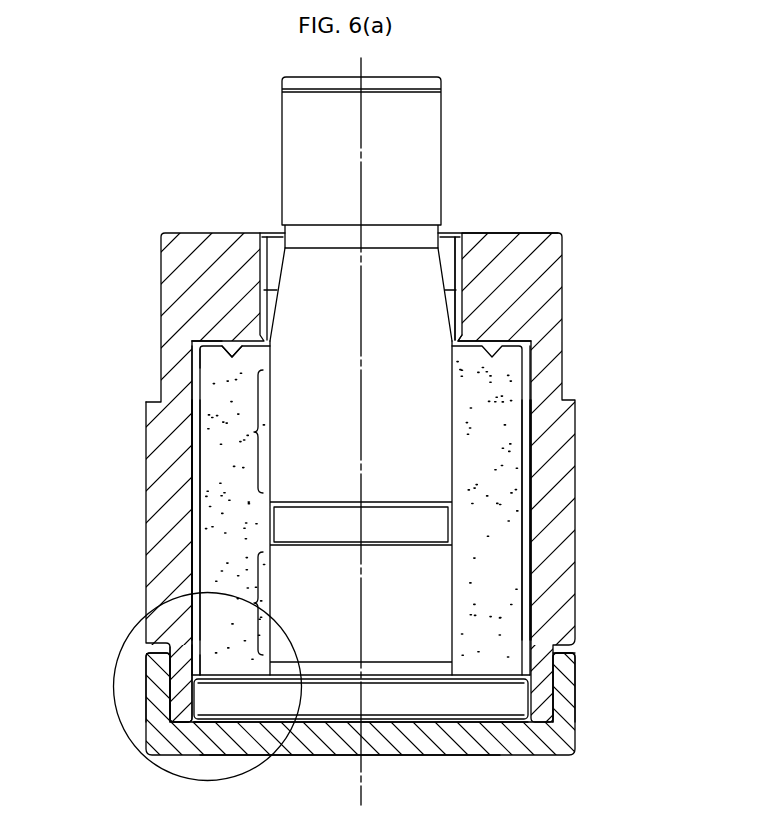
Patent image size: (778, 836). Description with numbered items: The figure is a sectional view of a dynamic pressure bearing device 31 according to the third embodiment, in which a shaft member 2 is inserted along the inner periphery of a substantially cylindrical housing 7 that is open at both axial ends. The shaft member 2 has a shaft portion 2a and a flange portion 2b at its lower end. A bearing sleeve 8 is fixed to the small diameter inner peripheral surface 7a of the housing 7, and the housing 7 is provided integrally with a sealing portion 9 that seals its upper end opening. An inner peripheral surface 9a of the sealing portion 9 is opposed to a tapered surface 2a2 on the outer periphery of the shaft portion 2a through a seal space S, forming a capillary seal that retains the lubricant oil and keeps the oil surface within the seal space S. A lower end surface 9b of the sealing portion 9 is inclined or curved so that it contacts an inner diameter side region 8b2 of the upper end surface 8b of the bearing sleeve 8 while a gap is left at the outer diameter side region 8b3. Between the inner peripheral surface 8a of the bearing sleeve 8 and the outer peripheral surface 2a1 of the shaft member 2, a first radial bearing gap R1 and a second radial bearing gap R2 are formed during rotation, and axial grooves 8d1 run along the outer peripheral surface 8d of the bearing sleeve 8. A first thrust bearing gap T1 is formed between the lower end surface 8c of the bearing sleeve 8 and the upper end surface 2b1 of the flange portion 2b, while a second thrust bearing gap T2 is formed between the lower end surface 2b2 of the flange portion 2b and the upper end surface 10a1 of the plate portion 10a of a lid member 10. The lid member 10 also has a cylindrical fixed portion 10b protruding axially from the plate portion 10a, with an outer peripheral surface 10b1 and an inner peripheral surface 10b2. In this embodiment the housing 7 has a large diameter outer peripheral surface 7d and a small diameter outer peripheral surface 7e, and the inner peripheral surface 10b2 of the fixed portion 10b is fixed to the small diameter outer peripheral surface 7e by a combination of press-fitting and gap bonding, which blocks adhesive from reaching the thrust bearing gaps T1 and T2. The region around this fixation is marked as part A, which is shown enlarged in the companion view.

The shaft member 2 is at (432, 408).
The shaft portion 2a is at (428, 135).
The outer peripheral surface of the shaft member 2a1 is at (453, 397).
The tapered surface 2a2 is at (447, 272).
The flange portion 2b is at (508, 695).
The upper end surface of the flange portion 2b1 is at (490, 670).
The lower end surface of the flange portion 2b2 is at (482, 726).
The housing 7 is at (160, 508).
The small diameter inner peripheral surface 7a is at (514, 517).
The large diameter outer peripheral surface 7d is at (190, 537).
The small diameter outer peripheral surface 7e is at (148, 673).
The bearing sleeve 8 is at (511, 435).
The inner peripheral surface of the bearing sleeve 8a is at (453, 438).
The upper end surface of the bearing sleeve 8b is at (493, 334).
The inner diameter side region of the upper end surface 8b2 is at (248, 343).
The outer diameter side region of the upper end surface 8b3 is at (210, 342).
The lower end surface of the bearing sleeve 8c is at (227, 683).
The outer peripheral surface of the bearing sleeve 8d is at (533, 570).
The axial groove 8d1 is at (197, 422).
The sealing portion 9 is at (202, 253).
The inner peripheral surface of the sealing portion 9a is at (268, 300).
The lower end surface of the sealing portion 9b is at (208, 362).
The lid member 10 is at (485, 764).
The plate portion 10a is at (418, 748).
The upper end surface of the plate portion 10a1 is at (292, 724).
The fixed portion 10b is at (562, 708).
The outer peripheral surface of the fixed portion 10b1 is at (157, 700).
The inner peripheral surface of the fixed portion 10b2 is at (553, 646).
The dynamic pressure bearing device 31 is at (579, 193).
The part A is at (121, 751).
The seal space S is at (273, 292).
The first radial bearing gap R1 is at (233, 433).
The second radial bearing gap R2 is at (236, 600).
The first thrust bearing gap T1 is at (238, 666).
The second thrust bearing gap T2 is at (231, 726).